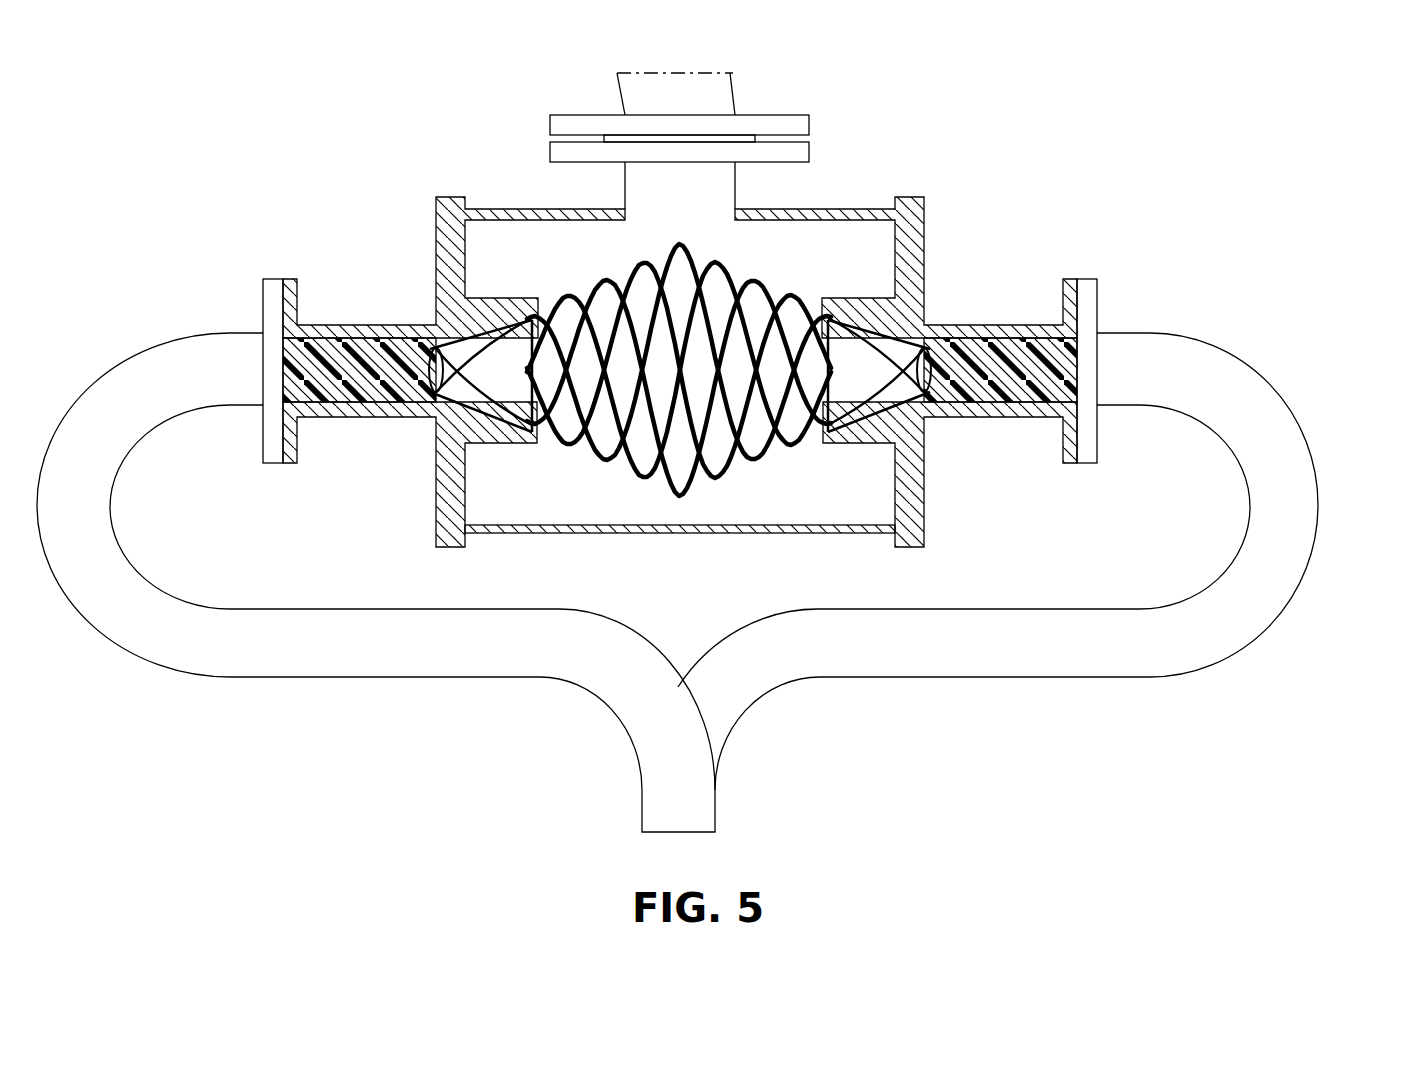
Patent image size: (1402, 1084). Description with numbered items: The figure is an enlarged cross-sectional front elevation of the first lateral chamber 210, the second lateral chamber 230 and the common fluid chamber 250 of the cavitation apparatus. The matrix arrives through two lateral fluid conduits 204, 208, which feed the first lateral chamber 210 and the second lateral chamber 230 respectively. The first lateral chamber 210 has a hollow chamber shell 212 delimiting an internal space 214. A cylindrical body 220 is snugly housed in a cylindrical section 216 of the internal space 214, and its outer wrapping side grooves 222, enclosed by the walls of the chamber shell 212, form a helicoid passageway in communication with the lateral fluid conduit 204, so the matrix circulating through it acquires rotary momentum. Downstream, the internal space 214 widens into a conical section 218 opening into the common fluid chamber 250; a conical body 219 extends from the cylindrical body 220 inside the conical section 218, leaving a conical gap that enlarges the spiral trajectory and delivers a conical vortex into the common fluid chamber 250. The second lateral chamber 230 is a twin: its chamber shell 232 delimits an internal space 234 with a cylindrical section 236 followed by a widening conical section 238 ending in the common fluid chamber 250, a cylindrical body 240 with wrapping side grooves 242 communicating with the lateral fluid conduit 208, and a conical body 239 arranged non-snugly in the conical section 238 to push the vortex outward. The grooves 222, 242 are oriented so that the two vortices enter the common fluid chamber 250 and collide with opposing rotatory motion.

The lateral fluid conduit 204 is at (152, 372).
The lateral fluid conduit 208 is at (1268, 425).
The first lateral chamber 210 is at (408, 369).
The chamber shell 212 is at (320, 330).
The internal space 214 is at (440, 402).
The cylindrical section 216 is at (335, 412).
The conical section 218 is at (498, 428).
The conical body 219 is at (495, 345).
The cylindrical body 220 is at (282, 335).
The wrapping side grooves 222 is at (357, 340).
The second lateral chamber 230 is at (930, 368).
The chamber shell 232 is at (983, 333).
The internal space 234 is at (918, 400).
The cylindrical section 236 is at (1027, 406).
The conical section 238 is at (860, 428).
The conical body 239 is at (867, 345).
The cylindrical body 240 is at (1007, 350).
The wrapping side grooves 242 is at (1002, 400).
The common fluid chamber 250 is at (838, 250).